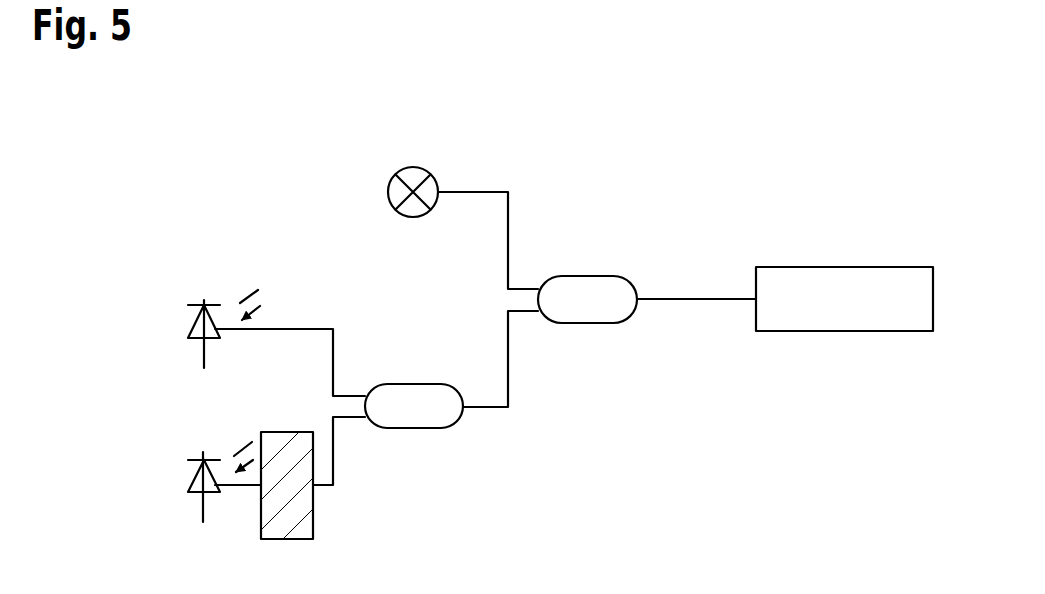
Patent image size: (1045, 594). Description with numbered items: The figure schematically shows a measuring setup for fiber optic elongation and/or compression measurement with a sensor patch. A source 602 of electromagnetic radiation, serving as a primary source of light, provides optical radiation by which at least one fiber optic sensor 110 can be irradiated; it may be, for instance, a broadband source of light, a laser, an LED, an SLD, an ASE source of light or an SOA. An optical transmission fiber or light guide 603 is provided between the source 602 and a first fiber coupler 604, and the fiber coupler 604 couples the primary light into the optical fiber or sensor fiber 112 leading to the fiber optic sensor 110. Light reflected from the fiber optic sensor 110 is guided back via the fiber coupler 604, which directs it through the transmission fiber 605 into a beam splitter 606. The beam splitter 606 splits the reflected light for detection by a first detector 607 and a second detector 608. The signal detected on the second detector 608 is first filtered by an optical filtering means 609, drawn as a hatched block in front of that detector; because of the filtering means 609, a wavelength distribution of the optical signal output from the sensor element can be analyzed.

The source of electromagnetic radiation 602 is at (413, 167).
The light guide 603 is at (490, 192).
The first fiber coupler 604 is at (590, 276).
The sensor fiber 112 is at (703, 298).
The fiber optic sensor 110 is at (856, 267).
The transmission fiber 605 is at (493, 409).
The beam splitter 606 is at (410, 429).
The first detector 607 is at (204, 355).
The second detector 608 is at (203, 507).
The optical filtering means 609 is at (287, 432).